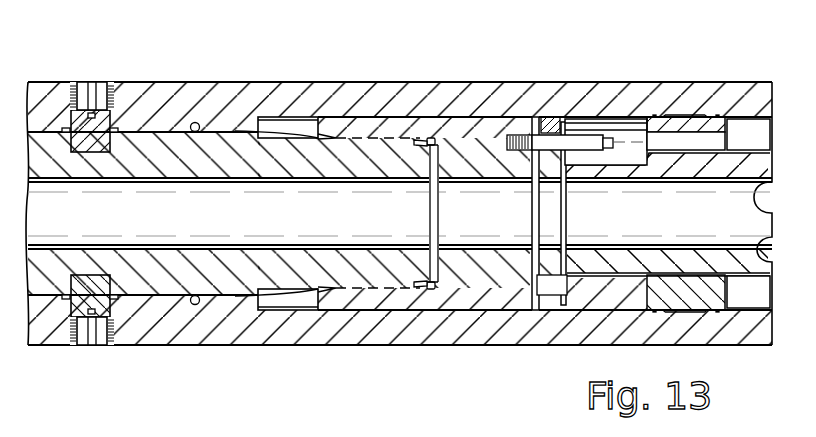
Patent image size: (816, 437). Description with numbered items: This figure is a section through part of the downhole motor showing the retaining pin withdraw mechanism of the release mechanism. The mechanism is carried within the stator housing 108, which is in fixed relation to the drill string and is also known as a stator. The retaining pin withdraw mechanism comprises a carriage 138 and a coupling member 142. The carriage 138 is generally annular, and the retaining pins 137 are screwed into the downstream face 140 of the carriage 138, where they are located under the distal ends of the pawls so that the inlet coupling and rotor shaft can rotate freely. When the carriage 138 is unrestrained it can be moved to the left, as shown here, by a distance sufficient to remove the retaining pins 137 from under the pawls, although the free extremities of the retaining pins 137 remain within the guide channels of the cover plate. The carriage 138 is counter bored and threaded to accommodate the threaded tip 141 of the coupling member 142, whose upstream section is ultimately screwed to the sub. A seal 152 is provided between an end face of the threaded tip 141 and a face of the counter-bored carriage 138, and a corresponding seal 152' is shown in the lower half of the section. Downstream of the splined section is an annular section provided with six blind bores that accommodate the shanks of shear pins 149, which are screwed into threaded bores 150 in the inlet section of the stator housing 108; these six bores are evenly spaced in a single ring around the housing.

The stator housing 108 is at (314, 98).
The retaining pin 137 is at (583, 140).
The carriage 138 is at (482, 143).
The downstream face 140 is at (553, 124).
The threaded tip 141 is at (357, 261).
The coupling member 142 is at (143, 268).
The shear pin 149 is at (85, 130).
The threaded bore 150 is at (72, 130).
The seal 152 is at (211, 172).
The pin 152' is at (459, 264).